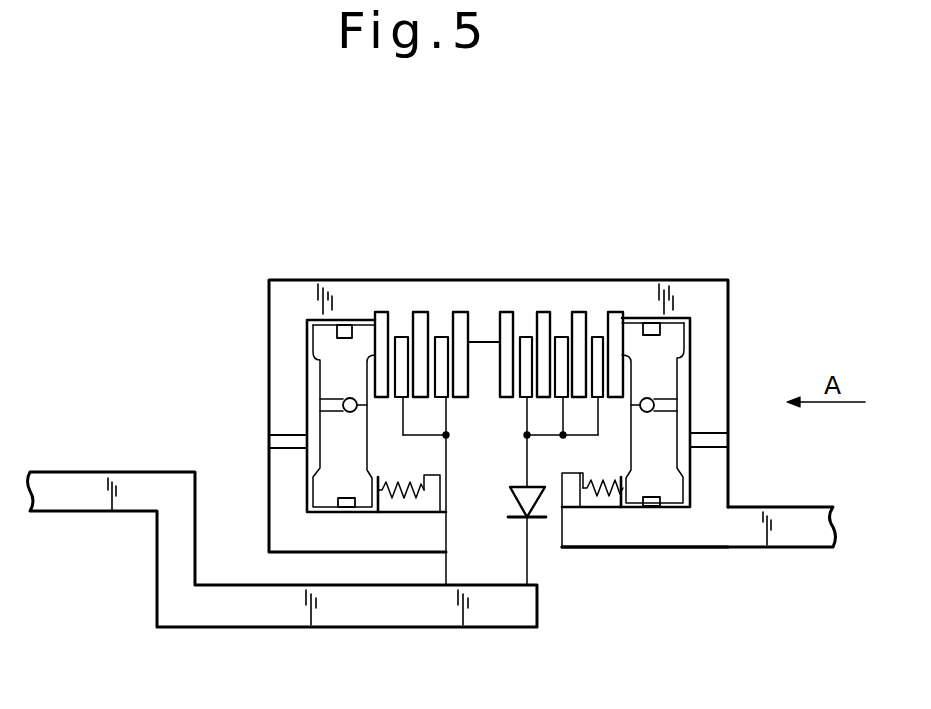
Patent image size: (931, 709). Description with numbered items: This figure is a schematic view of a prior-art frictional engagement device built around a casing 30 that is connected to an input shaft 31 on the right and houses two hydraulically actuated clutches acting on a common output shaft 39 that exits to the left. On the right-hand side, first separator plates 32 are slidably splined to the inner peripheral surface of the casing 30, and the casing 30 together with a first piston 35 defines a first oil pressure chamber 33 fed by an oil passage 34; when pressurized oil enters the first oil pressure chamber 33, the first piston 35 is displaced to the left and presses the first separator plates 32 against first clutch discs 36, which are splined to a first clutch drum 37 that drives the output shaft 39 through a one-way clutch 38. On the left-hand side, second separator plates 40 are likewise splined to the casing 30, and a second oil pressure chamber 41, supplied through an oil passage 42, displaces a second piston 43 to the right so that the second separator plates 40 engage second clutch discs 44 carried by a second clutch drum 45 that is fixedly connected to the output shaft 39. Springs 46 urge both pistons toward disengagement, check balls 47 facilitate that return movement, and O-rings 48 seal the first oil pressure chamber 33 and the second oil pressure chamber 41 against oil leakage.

The casing 30 is at (703, 281).
The input shaft 31 is at (805, 520).
The first separator plates 32 is at (615, 318).
The first oil pressure chamber 33 is at (677, 378).
The oil passage 34 is at (722, 440).
The first piston 35 is at (677, 340).
The first clutch discs 36 is at (522, 400).
The first clutch drum 37 is at (547, 437).
The one-way clutch 38 is at (516, 503).
The output shaft 39 is at (485, 630).
The second separator plates 40 is at (460, 318).
The second oil pressure chamber 41 is at (316, 392).
The oil passage 42 is at (275, 445).
The second piston 43 is at (335, 360).
The second clutch discs 44 is at (402, 400).
The second clutch drum 45 is at (423, 438).
The springs 46 is at (400, 495).
The check balls 47 is at (351, 413).
The O-rings 48 is at (345, 328).